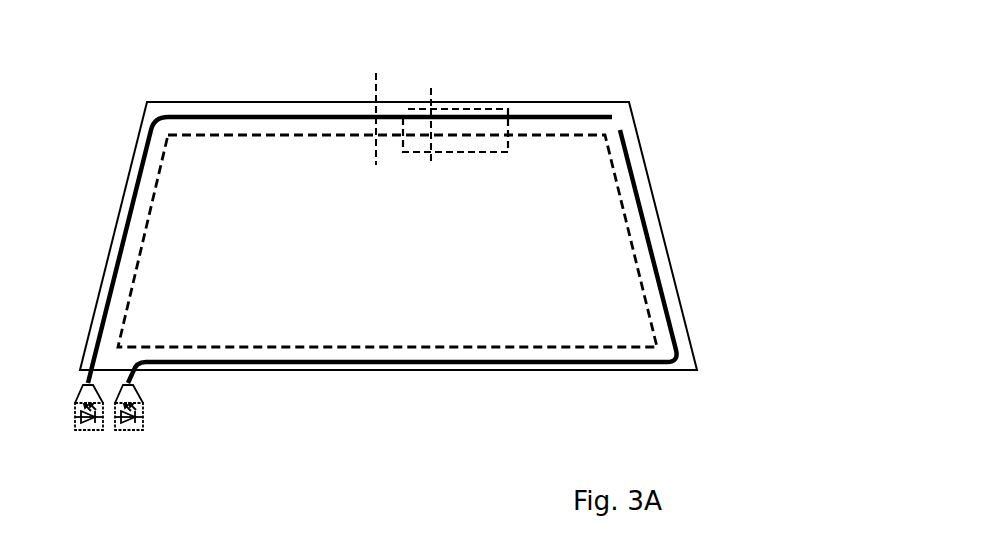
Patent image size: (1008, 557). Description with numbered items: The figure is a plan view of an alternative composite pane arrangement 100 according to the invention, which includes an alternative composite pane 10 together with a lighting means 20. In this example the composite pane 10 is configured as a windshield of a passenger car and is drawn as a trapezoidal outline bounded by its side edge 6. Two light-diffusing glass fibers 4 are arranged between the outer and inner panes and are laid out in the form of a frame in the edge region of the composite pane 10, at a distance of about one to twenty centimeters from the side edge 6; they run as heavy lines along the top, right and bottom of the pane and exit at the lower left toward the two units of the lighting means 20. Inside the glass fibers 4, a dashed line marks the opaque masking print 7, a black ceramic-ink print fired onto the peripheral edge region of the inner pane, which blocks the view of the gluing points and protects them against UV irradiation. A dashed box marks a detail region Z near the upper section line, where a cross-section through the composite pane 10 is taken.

The composite pane arrangement 100 is at (134, 78).
The side edge 6 is at (306, 95).
The light-diffusing glass fibers 4 is at (595, 115).
The composite pane 10 is at (598, 228).
The opaque masking print 7 is at (657, 297).
The detail region Z is at (443, 110).
The lighting means 20 is at (90, 432).